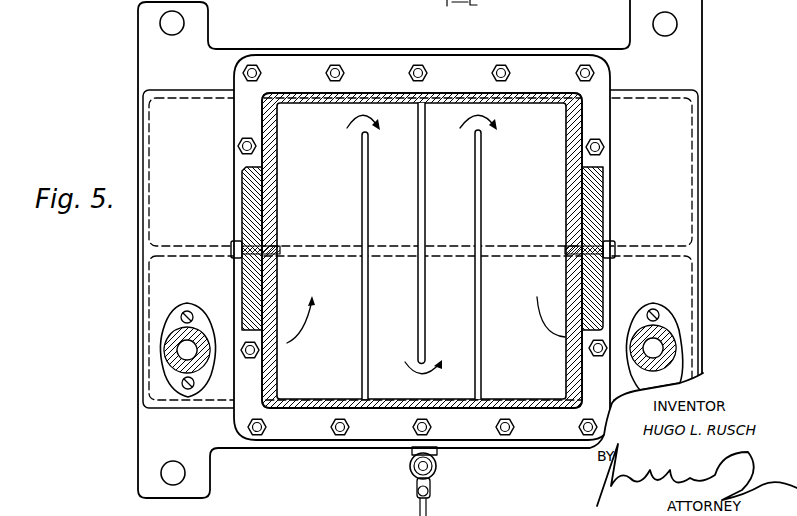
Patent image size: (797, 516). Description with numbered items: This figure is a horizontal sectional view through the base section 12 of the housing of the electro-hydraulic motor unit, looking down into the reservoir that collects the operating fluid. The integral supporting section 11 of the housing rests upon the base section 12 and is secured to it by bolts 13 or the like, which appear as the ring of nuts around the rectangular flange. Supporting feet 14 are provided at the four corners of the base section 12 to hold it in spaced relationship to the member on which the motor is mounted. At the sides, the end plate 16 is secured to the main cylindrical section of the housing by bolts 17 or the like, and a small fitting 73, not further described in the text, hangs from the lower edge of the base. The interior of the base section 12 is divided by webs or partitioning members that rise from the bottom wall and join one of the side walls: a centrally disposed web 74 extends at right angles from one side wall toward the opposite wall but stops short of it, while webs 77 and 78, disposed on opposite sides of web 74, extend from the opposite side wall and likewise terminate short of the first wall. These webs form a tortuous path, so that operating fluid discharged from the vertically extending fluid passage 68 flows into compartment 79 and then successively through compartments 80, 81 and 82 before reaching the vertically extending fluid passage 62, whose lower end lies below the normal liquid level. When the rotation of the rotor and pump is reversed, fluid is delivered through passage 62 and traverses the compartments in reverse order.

The supporting section 11 is at (372, 92).
The base section 12 is at (223, 60).
The bolts 13 is at (597, 72).
The supporting feet 14 is at (723, 0).
The end plate 16 is at (248, 194).
The bolts 17 is at (237, 262).
The fluid passage 62 is at (657, 348).
The fluid passage 68 is at (183, 350).
The hanger clamp 73 is at (437, 463).
The centrally disposed web 74 is at (418, 214).
The web 77 is at (362, 215).
The web 78 is at (482, 212).
The compartment 79 is at (310, 302).
The compartment 80 is at (391, 265).
The compartment 81 is at (446, 262).
The compartment 82 is at (536, 299).